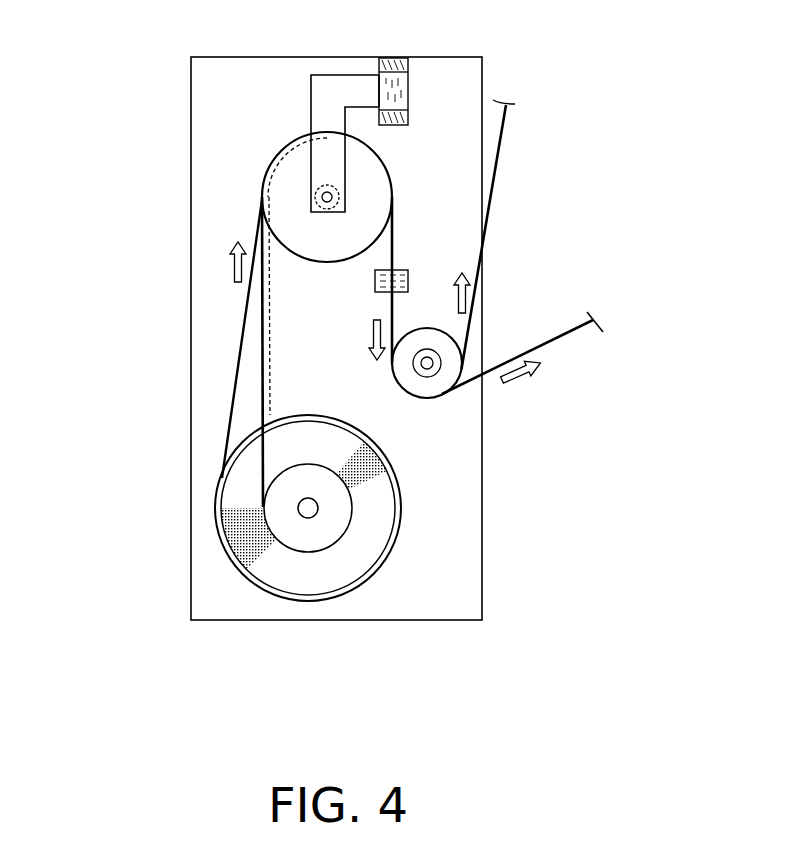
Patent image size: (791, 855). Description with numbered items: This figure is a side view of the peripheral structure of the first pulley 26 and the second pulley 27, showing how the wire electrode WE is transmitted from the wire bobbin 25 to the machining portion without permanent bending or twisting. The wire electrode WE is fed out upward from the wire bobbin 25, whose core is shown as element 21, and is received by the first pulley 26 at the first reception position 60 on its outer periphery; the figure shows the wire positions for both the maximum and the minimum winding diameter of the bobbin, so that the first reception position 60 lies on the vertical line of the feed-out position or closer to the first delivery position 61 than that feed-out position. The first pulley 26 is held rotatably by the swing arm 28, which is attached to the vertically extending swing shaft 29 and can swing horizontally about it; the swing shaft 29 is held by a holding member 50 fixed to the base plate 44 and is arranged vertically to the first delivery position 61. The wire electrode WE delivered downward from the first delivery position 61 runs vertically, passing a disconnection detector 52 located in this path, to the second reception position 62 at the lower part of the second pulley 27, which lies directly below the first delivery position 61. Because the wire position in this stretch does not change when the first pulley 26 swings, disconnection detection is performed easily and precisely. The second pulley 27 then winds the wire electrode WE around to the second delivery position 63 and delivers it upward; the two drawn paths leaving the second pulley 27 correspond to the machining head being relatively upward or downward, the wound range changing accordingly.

The spool shaft 21 is at (320, 509).
The wire bobbin 25 is at (398, 482).
The first pulley 26 is at (263, 188).
The second pulley 27 is at (432, 390).
The swing arm 28 is at (317, 102).
The swing shaft 29 is at (378, 90).
The base plate 44 is at (191, 204).
The holding member 50 is at (407, 66).
The disconnection detector 52 is at (396, 270).
The first reception position 60 is at (246, 209).
The first delivery position 61 is at (410, 197).
The second reception position 62 is at (372, 369).
The second delivery position 63 is at (478, 359).
The wire electrode WE is at (243, 355).